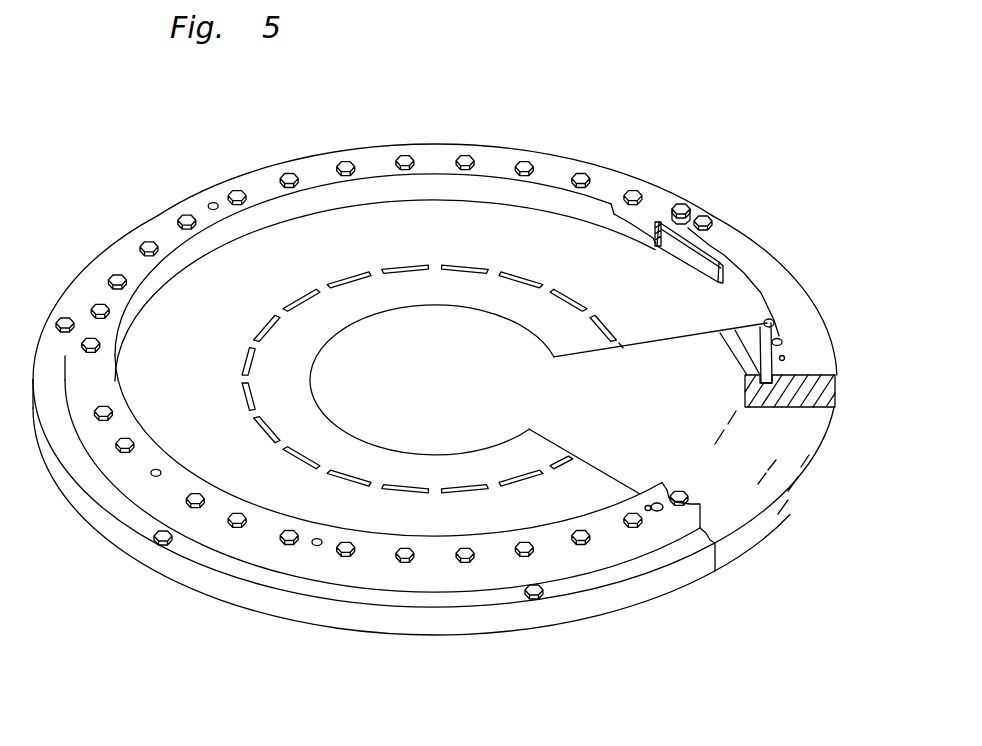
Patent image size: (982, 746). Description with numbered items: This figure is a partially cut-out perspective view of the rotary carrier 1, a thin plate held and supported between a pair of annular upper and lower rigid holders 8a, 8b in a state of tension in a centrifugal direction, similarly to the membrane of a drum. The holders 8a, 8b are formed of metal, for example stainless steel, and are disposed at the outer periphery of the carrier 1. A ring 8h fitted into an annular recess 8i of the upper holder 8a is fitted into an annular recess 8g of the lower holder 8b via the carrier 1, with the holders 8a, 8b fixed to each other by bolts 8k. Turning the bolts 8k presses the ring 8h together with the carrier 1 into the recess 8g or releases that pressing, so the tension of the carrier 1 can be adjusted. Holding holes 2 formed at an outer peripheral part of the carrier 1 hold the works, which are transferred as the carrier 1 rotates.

The carrier 1 is at (426, 228).
The holding holes 2 is at (270, 426).
The upper holder 8a is at (653, 198).
The lower holder 8b is at (804, 343).
The annular recess 8g is at (767, 363).
The ring 8h is at (711, 252).
The annular recess 8i is at (611, 203).
The bolts 8k is at (580, 170).